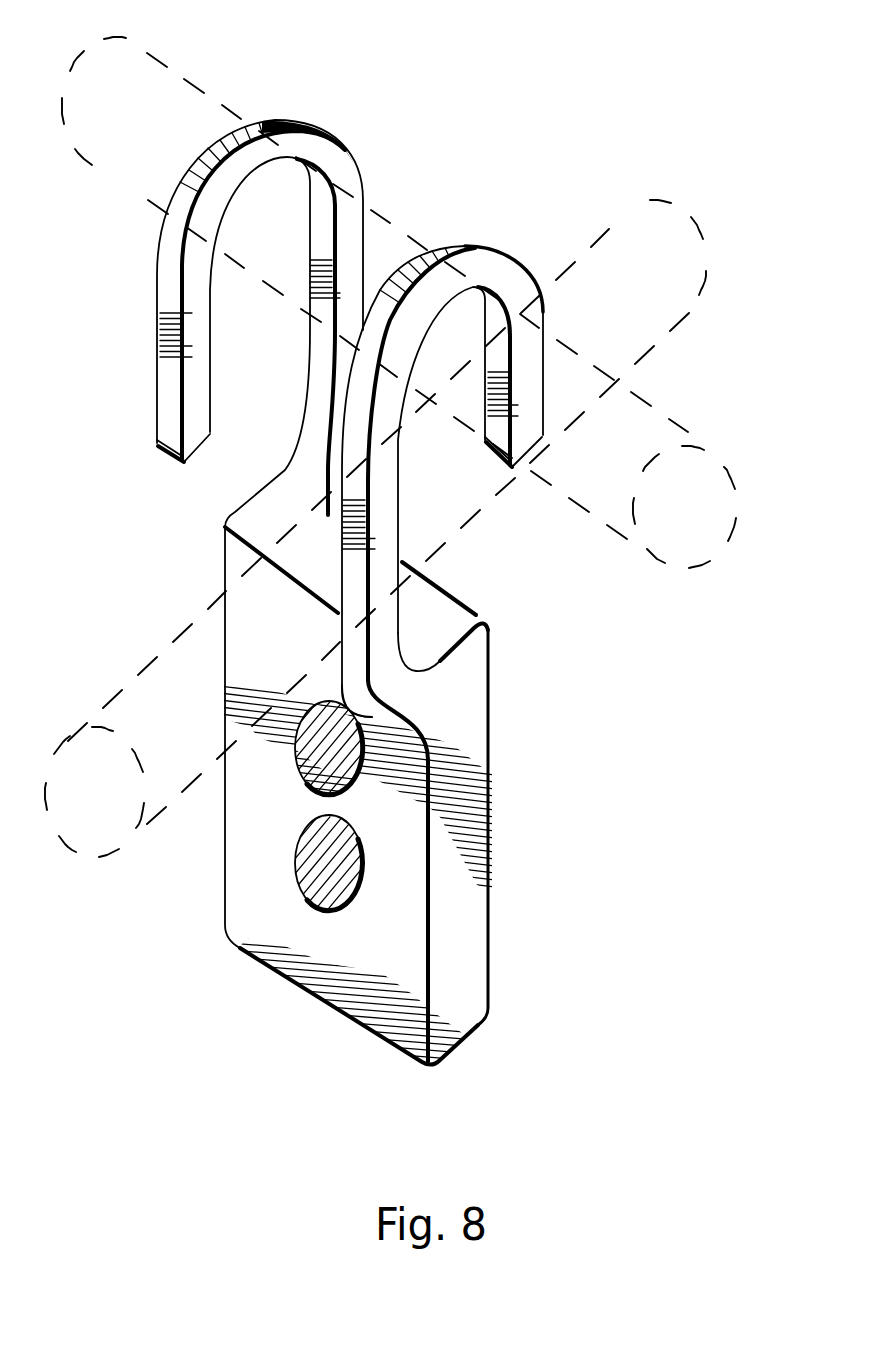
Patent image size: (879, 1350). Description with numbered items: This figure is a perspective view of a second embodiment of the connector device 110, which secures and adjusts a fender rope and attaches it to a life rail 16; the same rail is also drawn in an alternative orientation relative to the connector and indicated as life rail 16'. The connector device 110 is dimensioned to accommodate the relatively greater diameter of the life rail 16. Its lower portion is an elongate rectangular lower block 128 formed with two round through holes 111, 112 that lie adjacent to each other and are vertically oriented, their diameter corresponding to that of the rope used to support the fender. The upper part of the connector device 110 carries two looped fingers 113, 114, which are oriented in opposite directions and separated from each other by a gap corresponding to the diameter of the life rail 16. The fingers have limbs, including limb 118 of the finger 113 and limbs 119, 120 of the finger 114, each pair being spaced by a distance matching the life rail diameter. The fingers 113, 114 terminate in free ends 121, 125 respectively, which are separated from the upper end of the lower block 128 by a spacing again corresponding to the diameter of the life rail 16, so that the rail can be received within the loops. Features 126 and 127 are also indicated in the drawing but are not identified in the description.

The life rail 16 is at (426, 302).
The life rail in alternative orientation 16' is at (424, 528).
The connector device 110 is at (401, 779).
The round through hole 111 is at (297, 877).
The round through hole 112 is at (310, 777).
The looped finger 113 is at (495, 438).
The looped finger 114 is at (259, 275).
The limb 118 is at (380, 557).
The limb 119 is at (353, 228).
The limb 120 is at (165, 352).
The free end 121 is at (515, 388).
The free end 125 is at (178, 460).
The notch 126 is at (450, 593).
The lower edge 127 is at (312, 990).
The lower block 128 is at (470, 806).